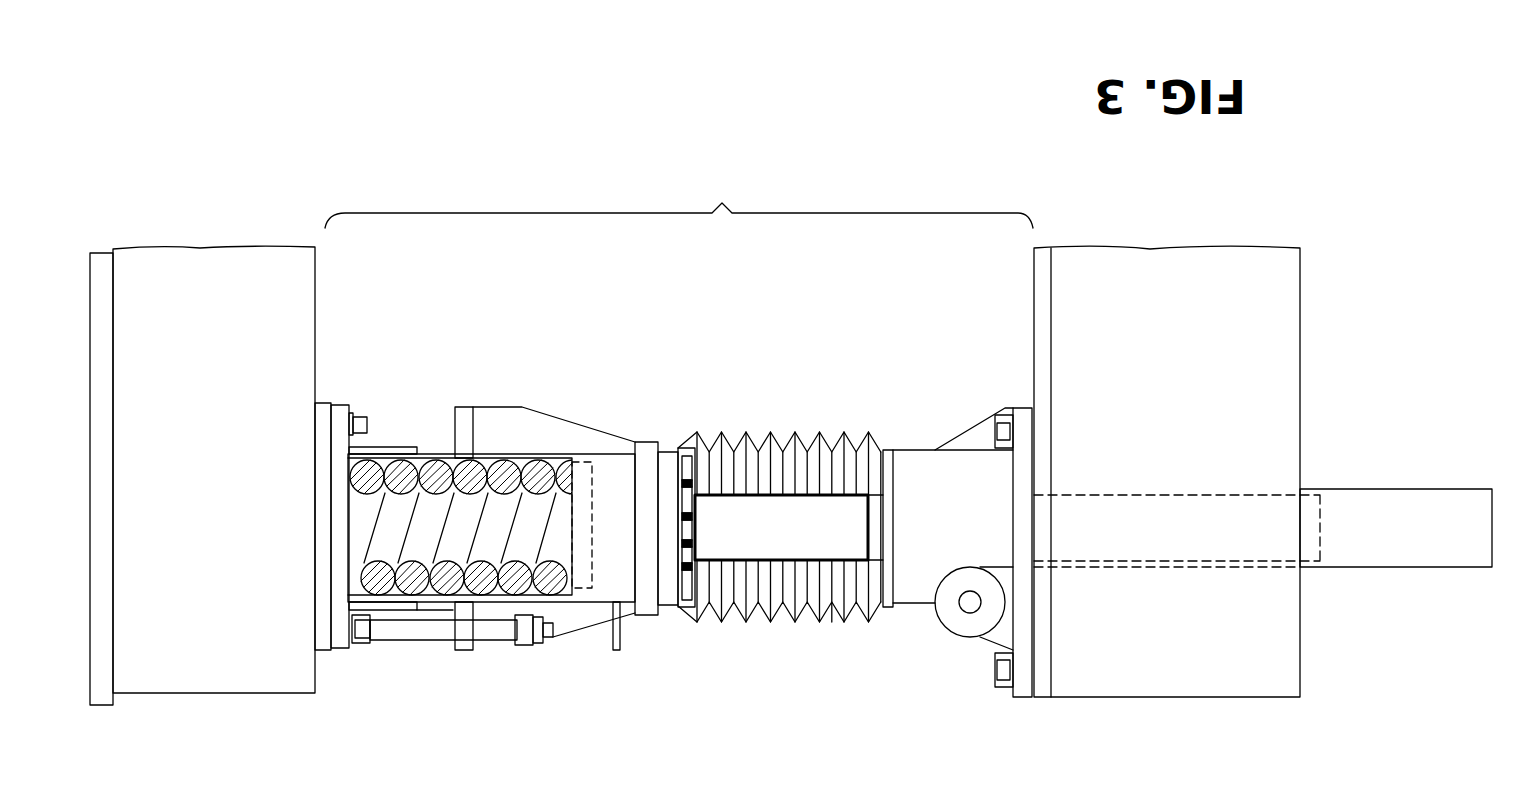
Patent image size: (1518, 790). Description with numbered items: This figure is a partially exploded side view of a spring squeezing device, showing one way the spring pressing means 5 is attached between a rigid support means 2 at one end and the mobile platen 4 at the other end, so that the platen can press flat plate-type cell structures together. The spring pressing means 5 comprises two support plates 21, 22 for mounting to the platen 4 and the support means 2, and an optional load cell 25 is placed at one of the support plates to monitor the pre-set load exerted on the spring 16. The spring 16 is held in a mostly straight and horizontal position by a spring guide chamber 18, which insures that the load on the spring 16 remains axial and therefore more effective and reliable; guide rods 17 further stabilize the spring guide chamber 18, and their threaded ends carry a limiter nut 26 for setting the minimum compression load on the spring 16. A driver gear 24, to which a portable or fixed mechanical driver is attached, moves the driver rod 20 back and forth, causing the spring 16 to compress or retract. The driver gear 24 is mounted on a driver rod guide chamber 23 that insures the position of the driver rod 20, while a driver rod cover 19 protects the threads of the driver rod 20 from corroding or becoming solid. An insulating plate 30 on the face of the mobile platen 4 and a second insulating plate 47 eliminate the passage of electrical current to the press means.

The support means 2 is at (1088, 674).
The mobile platen 4 is at (240, 678).
The spring pressing means 5 is at (679, 211).
The spring 16 is at (573, 553).
The guide rods 17 is at (417, 641).
The spring guide chamber 18 is at (577, 607).
The driver rod cover 19 is at (715, 621).
The driver rod 20 is at (806, 532).
The support plate 21 is at (340, 466).
The support plate 22 is at (1027, 438).
The driver rod guide chamber 23 is at (912, 600).
The driver gear 24 is at (948, 623).
The load cell 25 is at (320, 646).
The limiter nut 26 is at (523, 639).
The insulating plate 30 is at (111, 690).
The insulating plate 47 is at (672, 448).